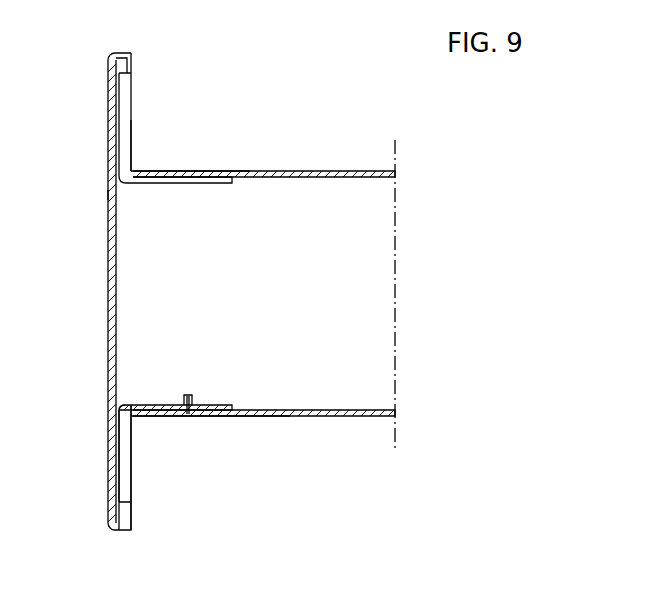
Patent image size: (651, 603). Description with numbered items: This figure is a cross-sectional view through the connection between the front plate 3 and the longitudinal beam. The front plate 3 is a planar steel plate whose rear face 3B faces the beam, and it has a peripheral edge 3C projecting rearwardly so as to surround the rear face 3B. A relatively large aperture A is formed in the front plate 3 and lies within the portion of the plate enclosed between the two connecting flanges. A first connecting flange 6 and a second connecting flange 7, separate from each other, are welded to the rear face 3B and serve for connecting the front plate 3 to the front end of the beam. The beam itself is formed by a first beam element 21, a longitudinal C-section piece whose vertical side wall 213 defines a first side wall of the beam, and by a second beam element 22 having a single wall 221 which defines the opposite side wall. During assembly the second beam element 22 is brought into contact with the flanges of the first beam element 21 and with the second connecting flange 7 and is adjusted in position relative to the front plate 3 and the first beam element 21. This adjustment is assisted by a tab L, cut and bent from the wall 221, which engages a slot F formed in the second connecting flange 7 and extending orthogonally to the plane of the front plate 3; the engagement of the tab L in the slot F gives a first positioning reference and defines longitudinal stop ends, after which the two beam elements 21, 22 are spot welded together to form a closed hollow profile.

The front plate 3 is at (112, 536).
The rear face 3B is at (121, 77).
The peripheral edge 3C is at (119, 53).
The aperture A is at (108, 198).
The first connecting flange 6 is at (215, 187).
The second connecting flange 7 is at (221, 401).
The first beam element 21 is at (341, 168).
The vertical side wall 213 is at (247, 170).
The second beam element 22 is at (331, 420).
The wall 221 is at (272, 418).
The slot F is at (181, 405).
The tab L is at (190, 395).